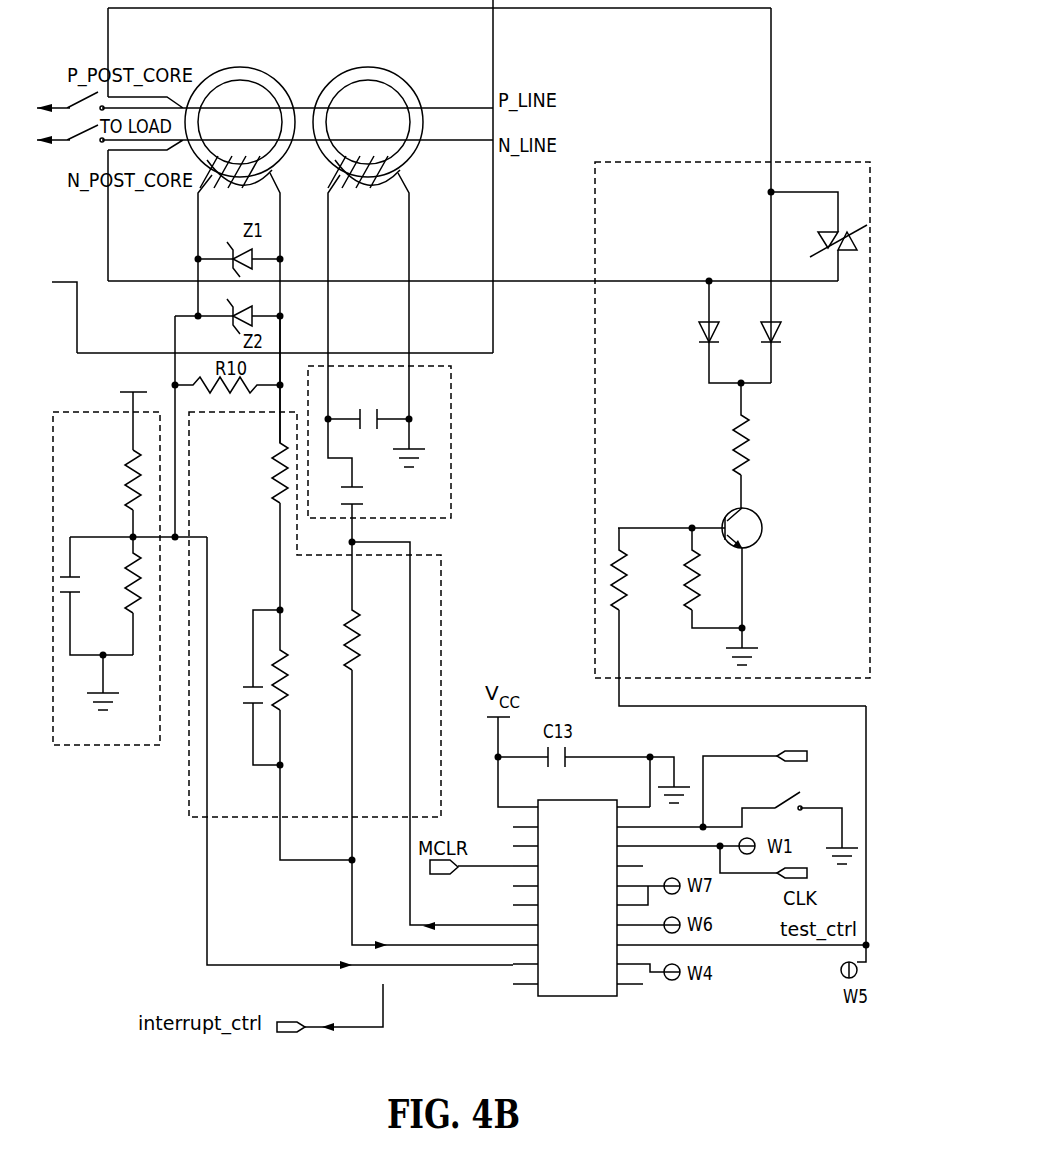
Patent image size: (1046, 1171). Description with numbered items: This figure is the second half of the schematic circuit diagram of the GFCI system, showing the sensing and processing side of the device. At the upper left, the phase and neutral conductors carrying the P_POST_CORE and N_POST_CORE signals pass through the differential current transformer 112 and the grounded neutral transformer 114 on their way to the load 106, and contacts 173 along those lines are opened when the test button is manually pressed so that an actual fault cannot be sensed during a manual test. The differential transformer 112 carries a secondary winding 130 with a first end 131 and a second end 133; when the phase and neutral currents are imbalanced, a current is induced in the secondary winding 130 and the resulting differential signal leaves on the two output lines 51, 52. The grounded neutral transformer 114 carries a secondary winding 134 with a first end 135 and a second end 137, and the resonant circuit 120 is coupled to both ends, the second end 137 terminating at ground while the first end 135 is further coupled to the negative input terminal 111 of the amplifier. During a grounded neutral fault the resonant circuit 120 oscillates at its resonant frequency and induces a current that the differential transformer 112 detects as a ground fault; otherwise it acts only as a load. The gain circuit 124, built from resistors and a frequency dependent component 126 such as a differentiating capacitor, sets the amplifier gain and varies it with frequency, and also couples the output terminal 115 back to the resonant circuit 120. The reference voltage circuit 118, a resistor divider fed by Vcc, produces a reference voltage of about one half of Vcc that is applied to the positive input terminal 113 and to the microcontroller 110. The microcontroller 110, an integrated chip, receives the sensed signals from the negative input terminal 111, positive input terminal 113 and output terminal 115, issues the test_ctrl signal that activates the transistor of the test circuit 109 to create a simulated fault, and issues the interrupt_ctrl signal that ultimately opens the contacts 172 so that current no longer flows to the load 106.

The contacts 173 is at (63, 100).
The load 106 is at (65, 150).
The differential current transformer 112 is at (248, 67).
The grounded neutral transformer 114 is at (376, 67).
The secondary winding 130 is at (222, 196).
The secondary winding 134 is at (391, 198).
The first end 131 is at (197, 290).
The second end 133 is at (282, 305).
The first end 135 is at (333, 262).
The second end 137 is at (410, 322).
The first sense signal line 51 is at (175, 338).
The second sense signal line 52 is at (282, 338).
The test circuit 109 is at (808, 162).
The resonant circuit 120 is at (452, 412).
The gain circuit 124 is at (325, 622).
The reference voltage circuit 118 is at (118, 748).
The frequency dependent component 126 is at (240, 726).
The microcontroller 110 is at (577, 800).
The negative input terminal 111 is at (515, 940).
The output terminal 115 is at (512, 920).
The positive input terminal 113 is at (506, 975).
The contacts 172 is at (740, 797).